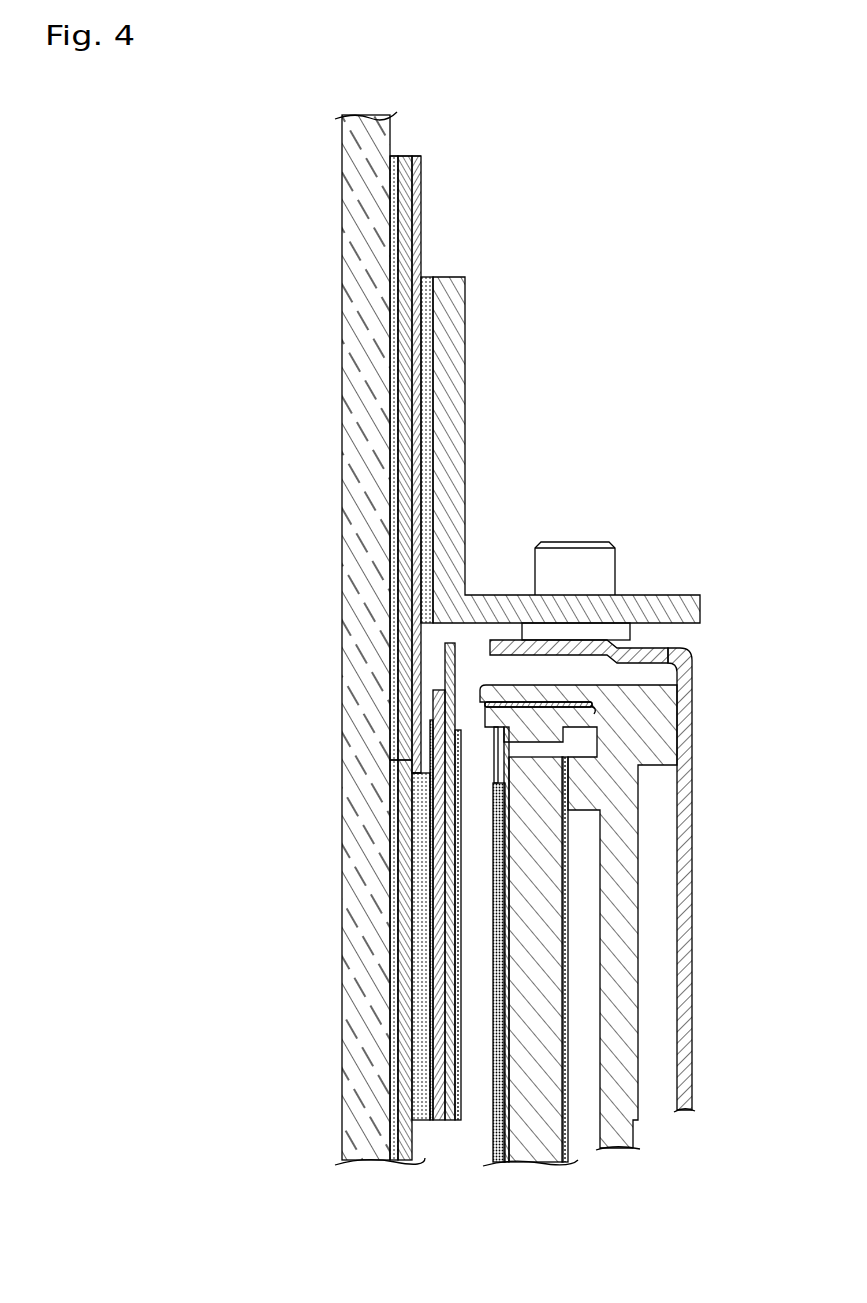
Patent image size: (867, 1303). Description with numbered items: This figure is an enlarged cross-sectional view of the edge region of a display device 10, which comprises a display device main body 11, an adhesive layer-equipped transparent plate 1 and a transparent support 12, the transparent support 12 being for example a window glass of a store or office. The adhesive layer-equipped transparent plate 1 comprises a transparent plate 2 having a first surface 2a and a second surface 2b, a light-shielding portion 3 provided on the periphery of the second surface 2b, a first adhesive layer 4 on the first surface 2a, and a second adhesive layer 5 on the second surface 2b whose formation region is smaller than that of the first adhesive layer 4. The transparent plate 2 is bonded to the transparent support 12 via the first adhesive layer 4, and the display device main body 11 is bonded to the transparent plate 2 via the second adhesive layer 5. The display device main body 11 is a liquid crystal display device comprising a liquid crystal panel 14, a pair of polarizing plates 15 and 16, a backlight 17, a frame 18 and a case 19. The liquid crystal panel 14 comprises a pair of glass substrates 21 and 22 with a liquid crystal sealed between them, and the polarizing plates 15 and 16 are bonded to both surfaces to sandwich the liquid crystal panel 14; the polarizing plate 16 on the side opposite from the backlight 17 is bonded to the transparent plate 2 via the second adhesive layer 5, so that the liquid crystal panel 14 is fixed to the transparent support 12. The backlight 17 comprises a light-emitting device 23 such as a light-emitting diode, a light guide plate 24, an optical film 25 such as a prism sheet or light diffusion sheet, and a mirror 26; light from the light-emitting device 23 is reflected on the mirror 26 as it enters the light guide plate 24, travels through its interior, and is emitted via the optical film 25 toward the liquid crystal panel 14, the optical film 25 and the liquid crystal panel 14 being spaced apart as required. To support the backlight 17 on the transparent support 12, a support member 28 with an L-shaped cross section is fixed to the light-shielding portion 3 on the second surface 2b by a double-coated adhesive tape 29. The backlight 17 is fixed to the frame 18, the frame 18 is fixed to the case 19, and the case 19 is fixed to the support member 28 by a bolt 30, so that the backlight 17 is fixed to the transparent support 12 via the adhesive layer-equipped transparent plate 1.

The adhesive layer-equipped transparent plate 1 is at (368, 658).
The transparent plate 2 is at (408, 832).
The first surface 2a is at (392, 232).
The second surface 2b is at (405, 217).
The light-shielding portion 3 is at (418, 170).
The first adhesive layer 4 is at (398, 890).
The second adhesive layer 5 is at (422, 790).
The display device 10 is at (579, 450).
The display device main body 11 is at (637, 876).
The transparent support 12 is at (355, 520).
The liquid crystal panel 14 is at (338, 905).
The polarizing plate 15 is at (428, 964).
The polarizing plate 16 is at (432, 1103).
The backlight 17 is at (601, 965).
The frame 18 is at (623, 862).
The case 19 is at (692, 793).
The glass substrate 21 is at (430, 1014).
The glass substrate 22 is at (430, 1062).
The light-emitting device 23 is at (590, 712).
The light guide plate 24 is at (545, 1015).
The optical film 25 is at (482, 1111).
The mirror 26 is at (567, 943).
The support member 28 is at (455, 407).
The double-coated adhesive tape 29 is at (428, 323).
The bolt 30 is at (570, 565).